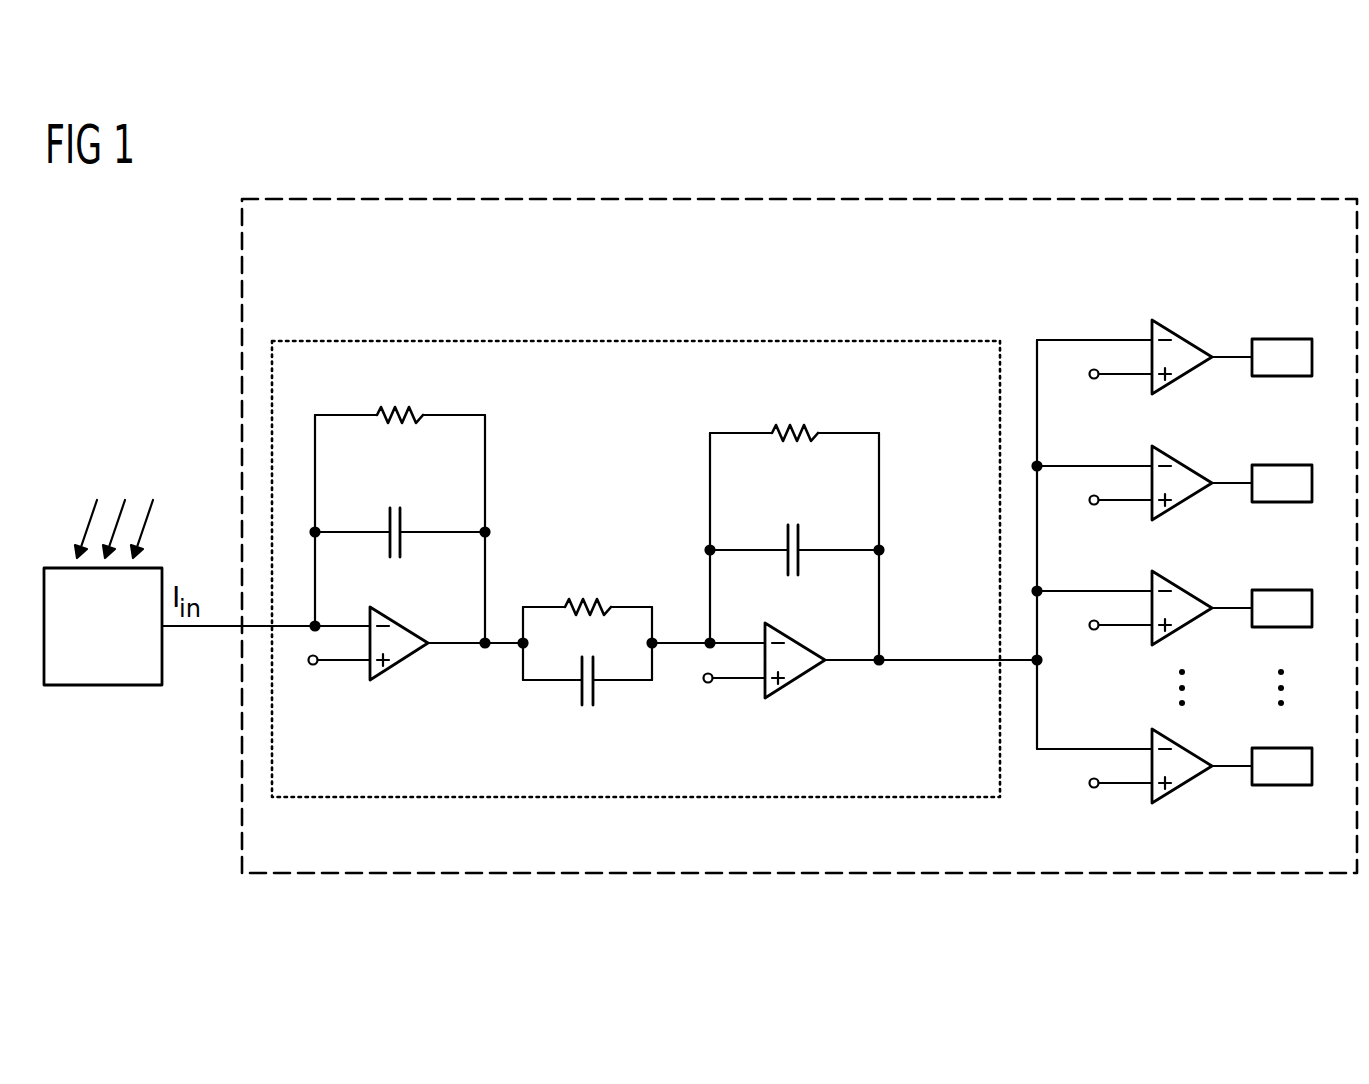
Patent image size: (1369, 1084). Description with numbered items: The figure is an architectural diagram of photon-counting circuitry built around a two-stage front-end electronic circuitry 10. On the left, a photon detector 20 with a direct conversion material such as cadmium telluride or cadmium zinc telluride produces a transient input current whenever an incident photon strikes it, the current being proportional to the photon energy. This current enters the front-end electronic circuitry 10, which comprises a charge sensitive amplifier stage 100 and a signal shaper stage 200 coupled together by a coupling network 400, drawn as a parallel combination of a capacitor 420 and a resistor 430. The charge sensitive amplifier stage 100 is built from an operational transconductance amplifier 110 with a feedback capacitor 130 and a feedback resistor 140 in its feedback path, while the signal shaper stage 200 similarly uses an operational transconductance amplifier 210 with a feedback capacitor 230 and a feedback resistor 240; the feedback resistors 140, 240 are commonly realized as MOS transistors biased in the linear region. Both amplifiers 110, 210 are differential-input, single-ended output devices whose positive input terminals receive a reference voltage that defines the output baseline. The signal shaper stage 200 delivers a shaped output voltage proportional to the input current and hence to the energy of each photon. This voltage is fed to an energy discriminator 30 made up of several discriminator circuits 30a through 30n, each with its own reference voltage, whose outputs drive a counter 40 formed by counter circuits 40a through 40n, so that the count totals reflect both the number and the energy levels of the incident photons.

The front-end electronic circuitry 10 is at (635, 341).
The photon detector 20 is at (103, 686).
The energy discriminator 30 is at (1132, 535).
The discriminator circuit 30a is at (1180, 377).
The discriminator circuit 30n is at (1180, 786).
The counter 40 is at (1269, 539).
The counter circuit 40a is at (1280, 377).
The counter circuit 40n is at (1280, 786).
The charge sensitive amplifier stage 100 is at (409, 559).
The operational transconductance amplifier 110 is at (400, 620).
The feedback capacitor 130 is at (398, 508).
The feedback resistor 140 is at (408, 413).
The signal shaper stage 200 is at (862, 575).
The operational transconductance amplifier 210 is at (795, 640).
The feedback capacitor 230 is at (795, 525).
The feedback resistor 240 is at (800, 432).
The coupling network 400 is at (642, 619).
The coupling capacitor 420 is at (587, 706).
The coupling resistor 430 is at (572, 604).